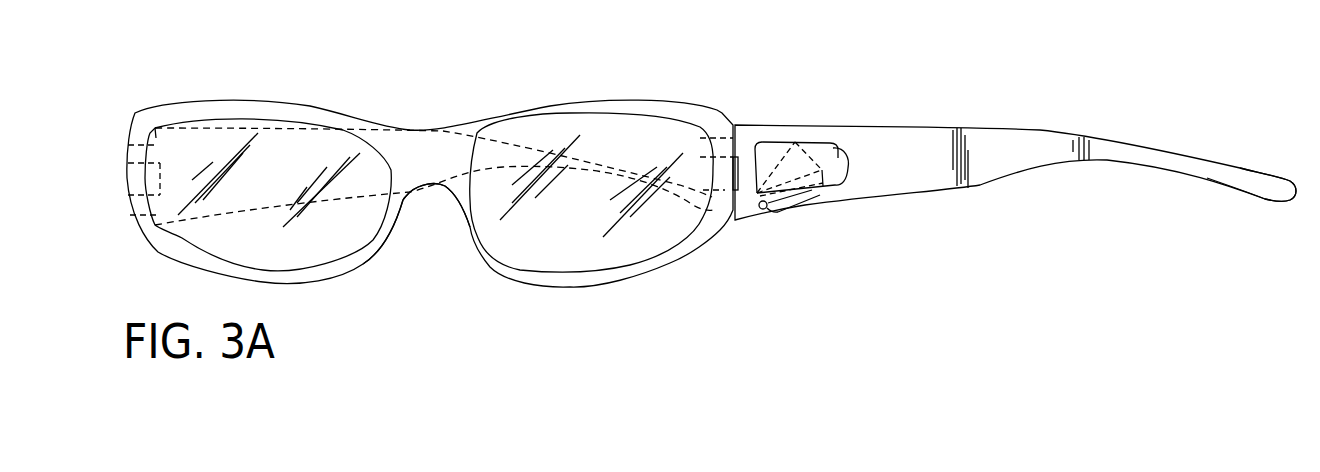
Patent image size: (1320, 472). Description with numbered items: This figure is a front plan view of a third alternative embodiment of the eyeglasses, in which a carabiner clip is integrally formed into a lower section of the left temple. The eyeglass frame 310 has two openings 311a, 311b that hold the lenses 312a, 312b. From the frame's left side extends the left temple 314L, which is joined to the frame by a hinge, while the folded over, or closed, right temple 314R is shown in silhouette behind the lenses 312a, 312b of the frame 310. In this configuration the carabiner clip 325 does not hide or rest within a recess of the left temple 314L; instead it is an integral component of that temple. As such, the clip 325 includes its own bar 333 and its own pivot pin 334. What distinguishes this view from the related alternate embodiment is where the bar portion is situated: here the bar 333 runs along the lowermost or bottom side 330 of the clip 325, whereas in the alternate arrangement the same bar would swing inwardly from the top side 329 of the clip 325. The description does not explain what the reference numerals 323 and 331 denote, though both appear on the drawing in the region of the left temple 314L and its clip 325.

The eyeglass frame 310 is at (665, 81).
The opening 311a is at (236, 114).
The opening 311b is at (552, 122).
The lens 312a is at (288, 245).
The lens 312b is at (603, 240).
The right temple 314R is at (416, 154).
The left temple 314L is at (973, 146).
The temple tip 323 is at (1285, 183).
The carabiner clip 325 is at (855, 195).
The top side 329 is at (767, 144).
The bottom side 330 is at (836, 147).
The hinge lobe 331 is at (855, 160).
The bar 333 is at (807, 188).
The pivot pin 334 is at (758, 207).